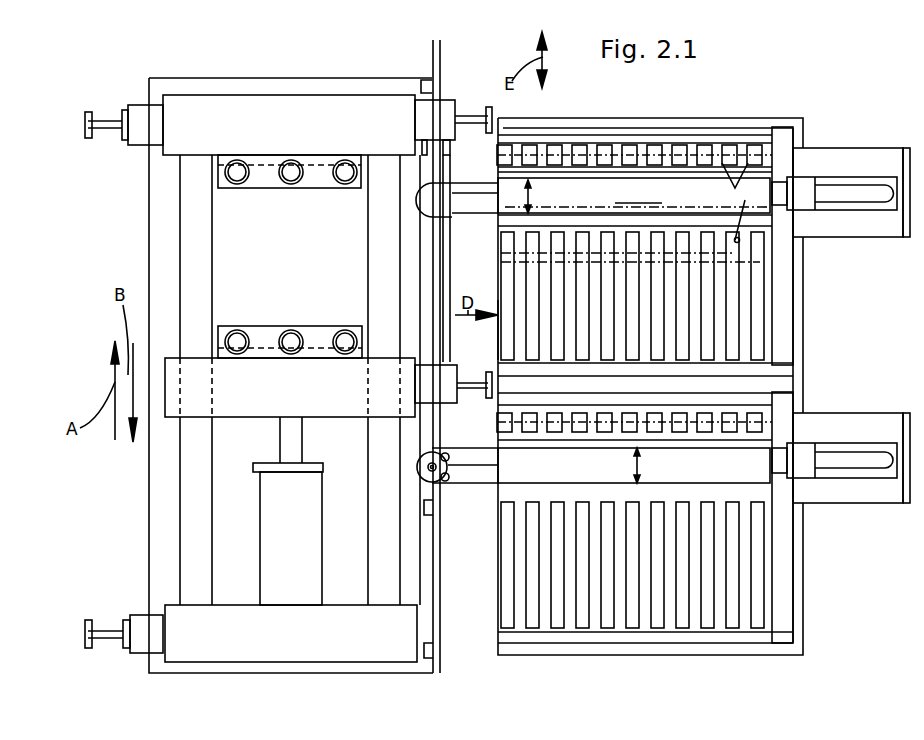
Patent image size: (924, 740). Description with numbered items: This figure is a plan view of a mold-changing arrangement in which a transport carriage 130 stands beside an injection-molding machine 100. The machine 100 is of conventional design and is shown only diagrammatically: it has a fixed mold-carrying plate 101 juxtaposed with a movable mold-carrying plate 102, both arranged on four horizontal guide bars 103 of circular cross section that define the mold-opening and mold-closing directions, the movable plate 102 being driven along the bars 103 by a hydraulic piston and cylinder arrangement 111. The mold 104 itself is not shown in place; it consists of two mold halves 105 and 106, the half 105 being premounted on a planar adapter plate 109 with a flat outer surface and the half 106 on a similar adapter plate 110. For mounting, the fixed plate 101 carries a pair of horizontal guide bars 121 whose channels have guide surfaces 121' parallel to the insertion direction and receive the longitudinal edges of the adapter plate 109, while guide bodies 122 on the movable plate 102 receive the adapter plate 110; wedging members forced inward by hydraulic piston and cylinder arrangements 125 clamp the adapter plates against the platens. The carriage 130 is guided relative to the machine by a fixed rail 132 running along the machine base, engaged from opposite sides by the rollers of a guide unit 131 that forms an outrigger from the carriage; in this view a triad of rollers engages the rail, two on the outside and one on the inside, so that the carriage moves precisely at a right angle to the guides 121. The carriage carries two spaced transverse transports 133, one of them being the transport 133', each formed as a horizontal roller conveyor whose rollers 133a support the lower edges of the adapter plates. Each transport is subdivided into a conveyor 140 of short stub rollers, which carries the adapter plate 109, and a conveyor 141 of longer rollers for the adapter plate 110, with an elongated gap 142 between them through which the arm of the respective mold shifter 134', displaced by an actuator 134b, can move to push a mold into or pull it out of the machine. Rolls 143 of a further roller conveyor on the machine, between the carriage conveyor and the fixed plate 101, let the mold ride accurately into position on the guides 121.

The injection-molding machine 100 is at (133, 88).
The fixed mold-carrying plate 101 is at (187, 108).
The movable mold-carrying plate 102 is at (228, 410).
The guide bars 103 is at (204, 257).
The mold 104 is at (745, 200).
The mold half 105 is at (738, 190).
The mold half 106 is at (739, 241).
The adapter plate 109 is at (692, 146).
The adapter plate 110 is at (760, 262).
The hydraulic piston and cylinder arrangement 111 is at (310, 453).
The guide bars 121 is at (289, 118).
The guide surface 121' is at (289, 107).
The guide bodies 122 is at (317, 333).
The hydraulic piston and cylinder arrangements 125 is at (344, 170).
The transport carriage 130 is at (808, 624).
The guide unit 131 is at (467, 210).
The fixed rail 132 is at (437, 56).
The transverse transport 133 is at (679, 429).
The transverse transport 133' is at (818, 246).
The rollers 133a is at (499, 330).
The mold shifter 134' is at (842, 177).
The actuator 134b is at (634, 330).
The roller conveyor 140 is at (569, 136).
The roller conveyor 141 is at (726, 309).
The elongated gap 142 is at (581, 331).
The rolls 143 is at (427, 268).